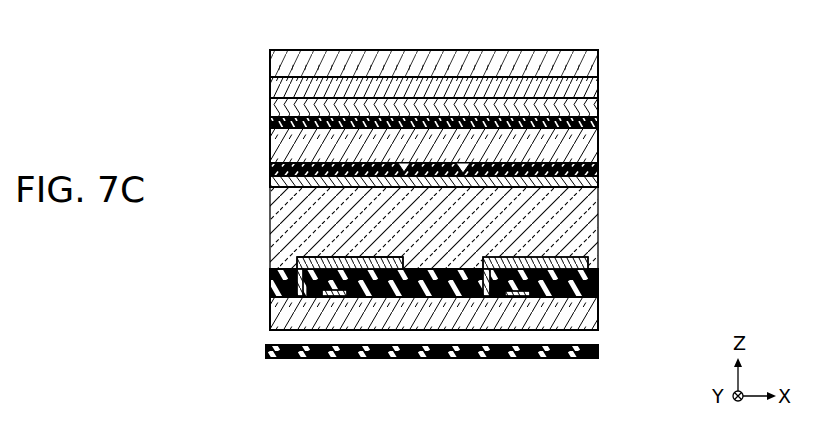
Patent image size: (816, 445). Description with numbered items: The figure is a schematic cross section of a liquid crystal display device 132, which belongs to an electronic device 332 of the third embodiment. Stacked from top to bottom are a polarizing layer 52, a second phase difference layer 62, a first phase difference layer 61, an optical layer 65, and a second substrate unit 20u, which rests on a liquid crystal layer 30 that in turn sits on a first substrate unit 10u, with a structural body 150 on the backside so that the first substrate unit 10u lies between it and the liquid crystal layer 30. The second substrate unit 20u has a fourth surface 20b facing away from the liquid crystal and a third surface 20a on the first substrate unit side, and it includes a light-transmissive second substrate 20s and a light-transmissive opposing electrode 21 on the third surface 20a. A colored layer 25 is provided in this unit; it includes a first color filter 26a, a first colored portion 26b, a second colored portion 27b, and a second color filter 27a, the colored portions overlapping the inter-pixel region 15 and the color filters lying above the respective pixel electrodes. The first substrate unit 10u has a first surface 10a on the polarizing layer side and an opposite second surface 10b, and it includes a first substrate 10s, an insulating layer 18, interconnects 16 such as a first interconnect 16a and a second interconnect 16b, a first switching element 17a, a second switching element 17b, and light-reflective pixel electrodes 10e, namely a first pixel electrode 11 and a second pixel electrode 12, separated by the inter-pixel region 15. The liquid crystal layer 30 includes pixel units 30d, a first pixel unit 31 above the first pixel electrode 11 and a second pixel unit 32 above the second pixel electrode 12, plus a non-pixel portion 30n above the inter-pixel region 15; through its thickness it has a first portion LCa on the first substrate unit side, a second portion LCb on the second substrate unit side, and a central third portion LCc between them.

The colored layer 25 is at (565, 31).
The first color filter 26a is at (333, 178).
The first colored portion 26b is at (407, 178).
The second color filter 27a is at (537, 178).
The second colored portion 27b is at (447, 178).
The polarizing layer 52 is at (585, 62).
The second phase difference layer 62 is at (585, 84).
The first phase difference layer 61 is at (585, 107).
The optical layer 65 is at (585, 122).
The second substrate 20s is at (573, 152).
The opposing electrode 21 is at (580, 181).
The second substrate unit 20u is at (663, 143).
The fourth surface 20b is at (301, 128).
The third surface 20a is at (300, 186).
The liquid crystal display device 132 is at (687, 109).
The electronic device 332 is at (707, 144).
The liquid crystal layer 30 is at (664, 202).
The second portion LCb is at (547, 197).
The third portion LCc is at (547, 227).
The first portion LCa is at (547, 255).
The first pixel unit 31 is at (346, 244).
The pixel units 30d is at (410, 318).
The second pixel unit 32 is at (532, 242).
The non-pixel portion 30n is at (437, 243).
The inter-pixel region 15 is at (402, 270).
The second pixel electrode 12 is at (553, 268).
The pixel electrodes 10e is at (420, 309).
The first pixel electrode 11 is at (310, 289).
The insulating layer 18 is at (575, 290).
The first substrate 10s is at (585, 320).
The first substrate unit 10u is at (664, 270).
The first surface 10a is at (303, 267).
The second surface 10b is at (278, 336).
The structural body 150 is at (590, 353).
The interconnects 16 is at (448, 405).
The first interconnect 16a is at (332, 297).
The second interconnect 16b is at (520, 297).
The first switching element 17a is at (310, 294).
The second switching element 17b is at (505, 297).